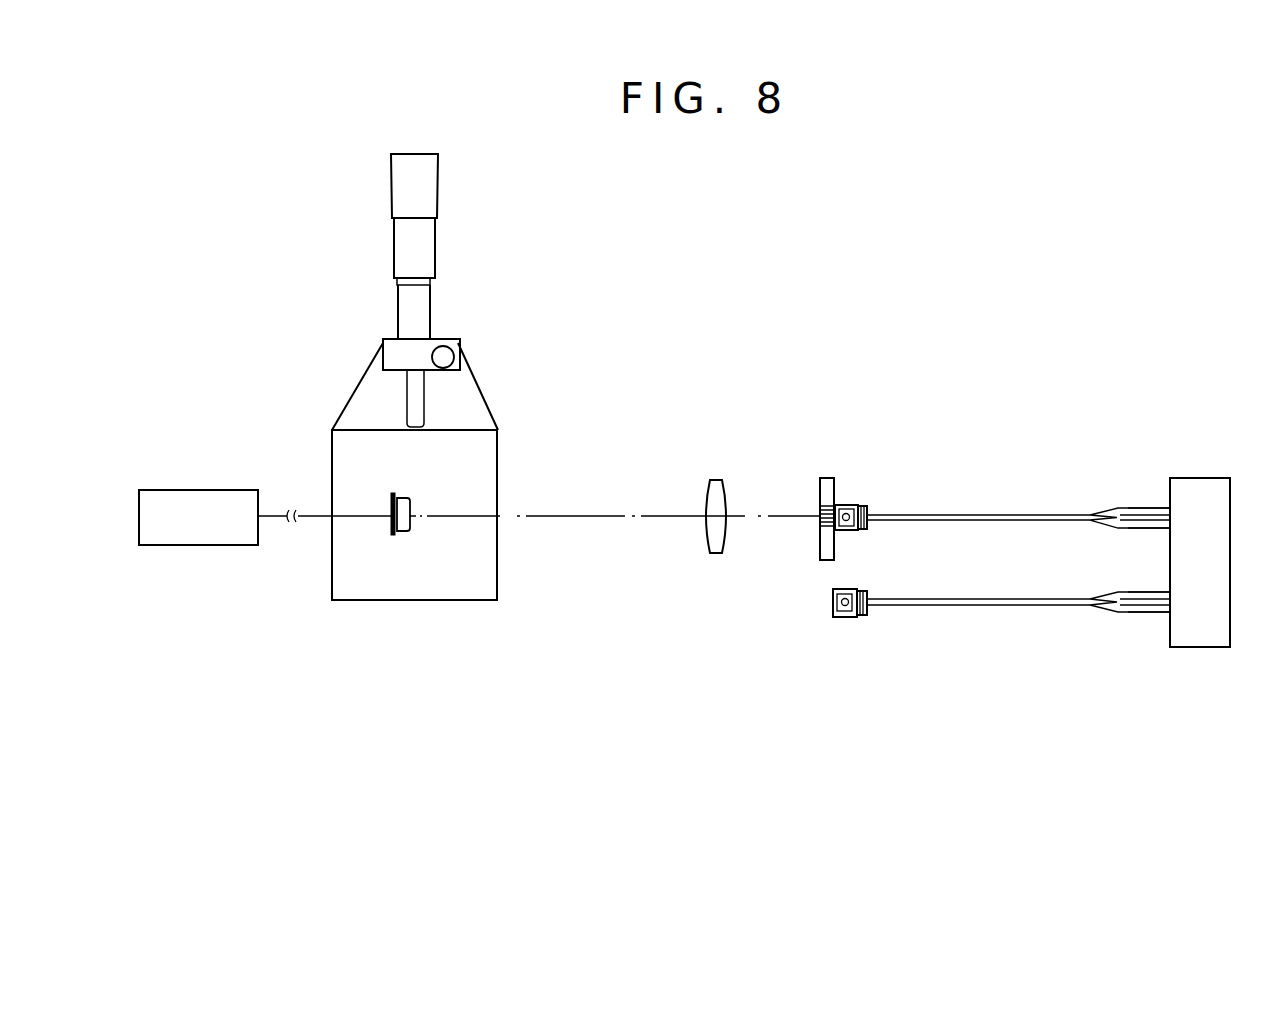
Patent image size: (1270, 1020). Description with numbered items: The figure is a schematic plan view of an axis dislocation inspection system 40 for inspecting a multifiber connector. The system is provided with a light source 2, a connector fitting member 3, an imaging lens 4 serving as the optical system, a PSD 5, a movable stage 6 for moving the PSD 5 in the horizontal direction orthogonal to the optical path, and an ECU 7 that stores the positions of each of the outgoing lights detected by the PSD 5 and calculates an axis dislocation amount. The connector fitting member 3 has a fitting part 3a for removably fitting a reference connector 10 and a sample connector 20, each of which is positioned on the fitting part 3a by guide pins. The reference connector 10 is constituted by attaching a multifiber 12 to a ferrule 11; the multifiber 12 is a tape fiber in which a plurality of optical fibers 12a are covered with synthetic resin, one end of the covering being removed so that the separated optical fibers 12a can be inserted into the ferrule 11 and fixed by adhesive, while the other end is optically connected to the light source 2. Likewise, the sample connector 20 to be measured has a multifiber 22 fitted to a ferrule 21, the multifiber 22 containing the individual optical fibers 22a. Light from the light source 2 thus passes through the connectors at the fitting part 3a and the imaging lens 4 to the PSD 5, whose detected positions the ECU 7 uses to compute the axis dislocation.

The light source 2 is at (1203, 487).
The connector fitting member 3 is at (828, 478).
The fitting part 3a is at (820, 527).
The imaging lens 4 is at (716, 480).
The PSD 5 is at (405, 533).
The movable stage 6 is at (475, 405).
The ECU 7 is at (230, 490).
The reference connector 10 is at (880, 493).
The ferrule 11 is at (866, 531).
The multifiber 12 is at (1047, 513).
The optical fibers 12a is at (1147, 522).
The sample connector 20 is at (870, 627).
The ferrule 21 is at (867, 586).
The multifiber 22 is at (1052, 607).
The optical fibers 22a is at (1132, 601).
The axis dislocation inspection system 40 is at (890, 285).